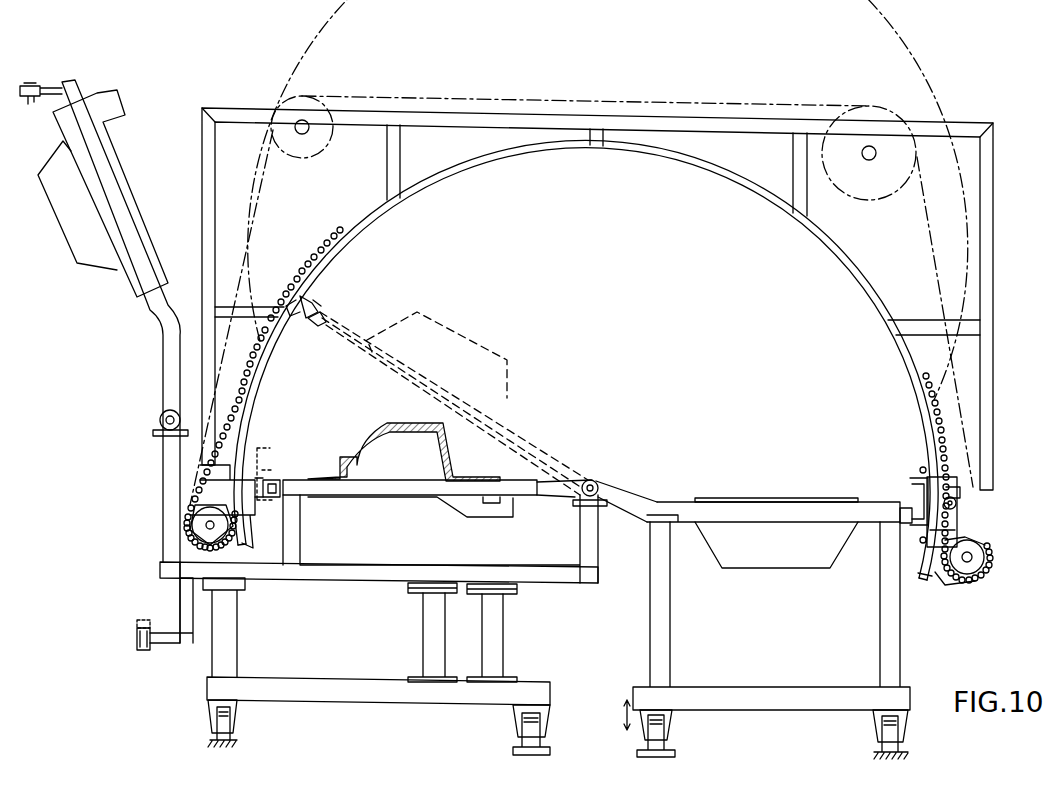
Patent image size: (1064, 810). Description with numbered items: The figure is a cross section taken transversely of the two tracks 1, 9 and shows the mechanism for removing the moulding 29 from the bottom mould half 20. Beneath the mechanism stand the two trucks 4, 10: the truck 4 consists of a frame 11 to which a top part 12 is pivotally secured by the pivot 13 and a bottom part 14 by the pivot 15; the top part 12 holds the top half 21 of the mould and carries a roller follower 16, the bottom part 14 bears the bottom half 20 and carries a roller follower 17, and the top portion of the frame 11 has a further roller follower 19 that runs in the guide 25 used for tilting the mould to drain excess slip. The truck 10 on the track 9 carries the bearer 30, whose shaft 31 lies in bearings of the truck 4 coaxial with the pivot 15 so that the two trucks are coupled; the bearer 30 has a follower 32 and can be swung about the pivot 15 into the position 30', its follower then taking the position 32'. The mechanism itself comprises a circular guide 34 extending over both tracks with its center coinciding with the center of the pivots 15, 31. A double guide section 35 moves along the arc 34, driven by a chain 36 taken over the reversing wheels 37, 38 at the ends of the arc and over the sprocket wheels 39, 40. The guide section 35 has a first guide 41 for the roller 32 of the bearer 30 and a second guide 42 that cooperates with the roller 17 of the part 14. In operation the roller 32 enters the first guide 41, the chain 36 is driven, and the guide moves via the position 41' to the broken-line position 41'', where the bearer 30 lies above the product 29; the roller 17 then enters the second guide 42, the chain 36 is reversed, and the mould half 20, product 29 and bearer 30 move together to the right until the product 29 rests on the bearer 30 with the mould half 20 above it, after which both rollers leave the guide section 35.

The track 1 is at (235, 740).
The truck 4 is at (322, 687).
The track 9 is at (672, 748).
The truck 10 is at (890, 638).
The frame 11 is at (428, 628).
The top part 12 is at (166, 355).
The pivot 13 is at (162, 414).
The bottom part 14 is at (410, 489).
The pivot 15 is at (598, 483).
The follower 16 is at (30, 104).
The follower 17 is at (268, 480).
The follower 19 is at (137, 647).
The bottom half of mould 20 is at (432, 500).
The top half of mould 21 is at (95, 258).
The guide 25 is at (137, 622).
The moulded product 29 is at (380, 427).
The bearer 30 is at (773, 515).
The bearer in pivoted position 30' is at (454, 399).
The shaft 31 is at (594, 480).
The follower 32 is at (880, 543).
The follower in pivoted position 32' is at (324, 340).
The circular guide 34 is at (872, 293).
The double guide section 35 is at (960, 498).
The chain 36 is at (985, 530).
The reversing wheel 37 is at (987, 562).
The reversing wheel 38 is at (203, 517).
The sprocket wheel 39 is at (322, 145).
The sprocket wheel 40 is at (870, 199).
The first guide 41 is at (896, 480).
The first guide in intermediate position 41' is at (309, 301).
The first guide in end position 41'' is at (282, 458).
The second guide 42 is at (257, 498).